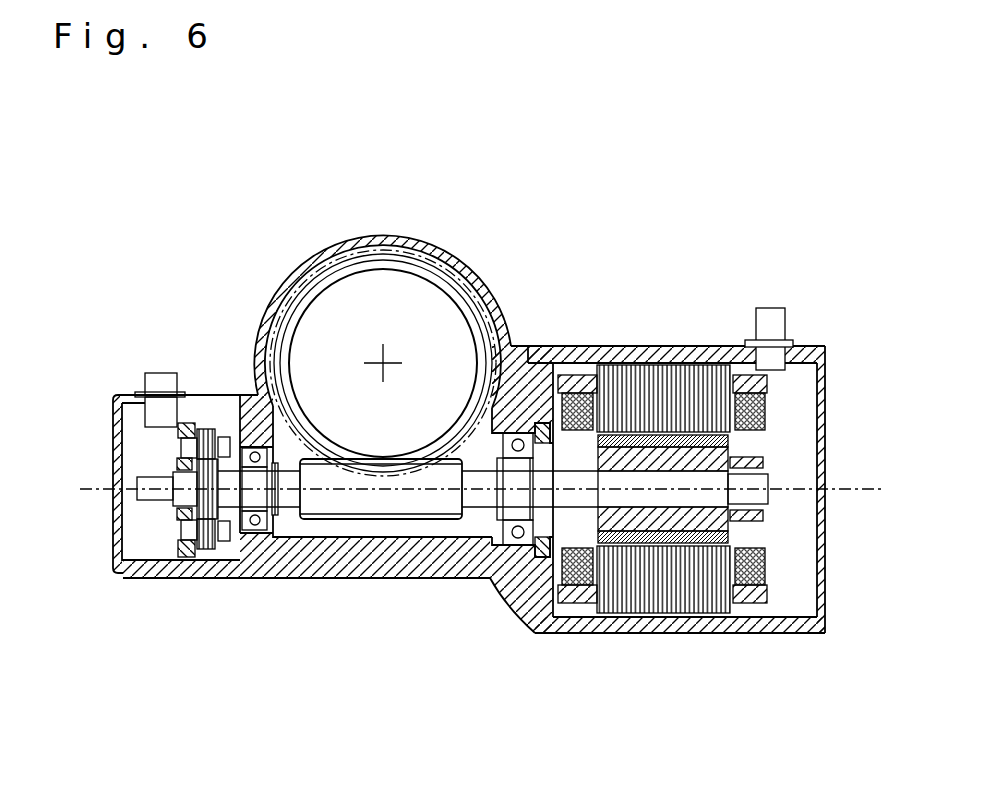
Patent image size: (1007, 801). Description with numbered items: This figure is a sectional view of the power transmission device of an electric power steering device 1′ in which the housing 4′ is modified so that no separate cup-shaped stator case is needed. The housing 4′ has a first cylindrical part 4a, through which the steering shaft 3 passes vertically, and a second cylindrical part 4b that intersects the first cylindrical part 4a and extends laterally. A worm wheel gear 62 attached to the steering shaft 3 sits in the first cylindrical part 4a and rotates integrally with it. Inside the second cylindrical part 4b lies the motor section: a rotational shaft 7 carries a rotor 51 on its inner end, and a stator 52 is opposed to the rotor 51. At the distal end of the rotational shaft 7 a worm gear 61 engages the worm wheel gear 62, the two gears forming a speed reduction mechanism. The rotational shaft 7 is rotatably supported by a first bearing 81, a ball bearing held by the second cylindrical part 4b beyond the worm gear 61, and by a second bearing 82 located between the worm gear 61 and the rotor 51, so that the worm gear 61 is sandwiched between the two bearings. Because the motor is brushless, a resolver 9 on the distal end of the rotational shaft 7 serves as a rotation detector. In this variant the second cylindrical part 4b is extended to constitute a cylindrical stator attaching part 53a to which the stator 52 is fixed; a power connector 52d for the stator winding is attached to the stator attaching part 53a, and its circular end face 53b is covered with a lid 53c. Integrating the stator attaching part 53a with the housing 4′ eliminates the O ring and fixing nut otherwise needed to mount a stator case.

The electric power steering device 1′ is at (538, 133).
The steering shaft 3 is at (322, 335).
The worm wheel gear 62 is at (322, 272).
The housing 4′ is at (443, 253).
The first cylindrical part 4a is at (517, 346).
The second cylindrical part 4b is at (425, 565).
The rotational shaft 7 is at (287, 497).
The resolver 9 is at (198, 545).
The first bearing 81 is at (252, 530).
The worm gear 61 is at (372, 512).
The second bearing 82 is at (516, 546).
The rotor 51 is at (651, 527).
The stator 52 is at (657, 373).
The power connector 52d is at (775, 315).
The stator attaching part 53a is at (598, 346).
The circular end face 53b is at (822, 633).
The lid 53c is at (828, 468).